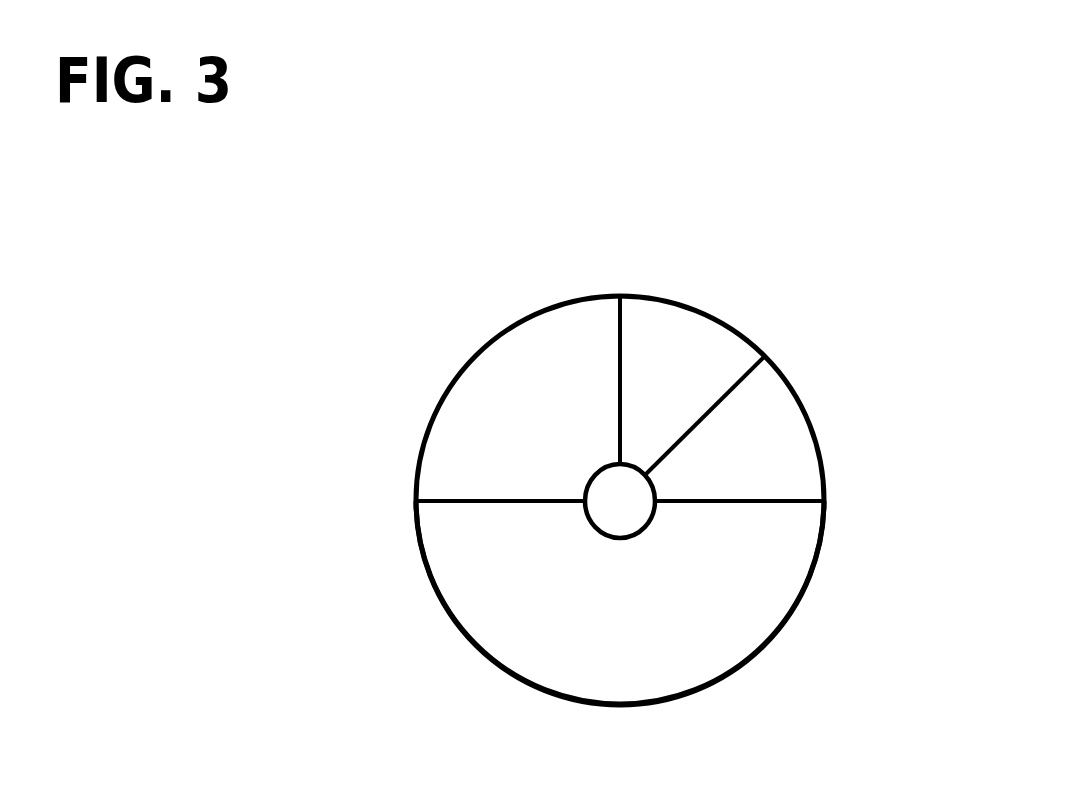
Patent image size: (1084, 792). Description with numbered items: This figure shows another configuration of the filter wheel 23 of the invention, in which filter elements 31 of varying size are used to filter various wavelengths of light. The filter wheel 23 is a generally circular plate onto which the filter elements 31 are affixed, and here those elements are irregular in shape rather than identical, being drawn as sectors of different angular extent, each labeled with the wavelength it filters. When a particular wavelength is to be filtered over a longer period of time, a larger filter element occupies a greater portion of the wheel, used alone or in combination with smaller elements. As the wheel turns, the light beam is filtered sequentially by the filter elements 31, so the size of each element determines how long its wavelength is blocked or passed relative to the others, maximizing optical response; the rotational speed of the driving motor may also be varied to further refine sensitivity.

The filter wheel 23 is at (793, 328).
The filter elements 31 is at (680, 500).